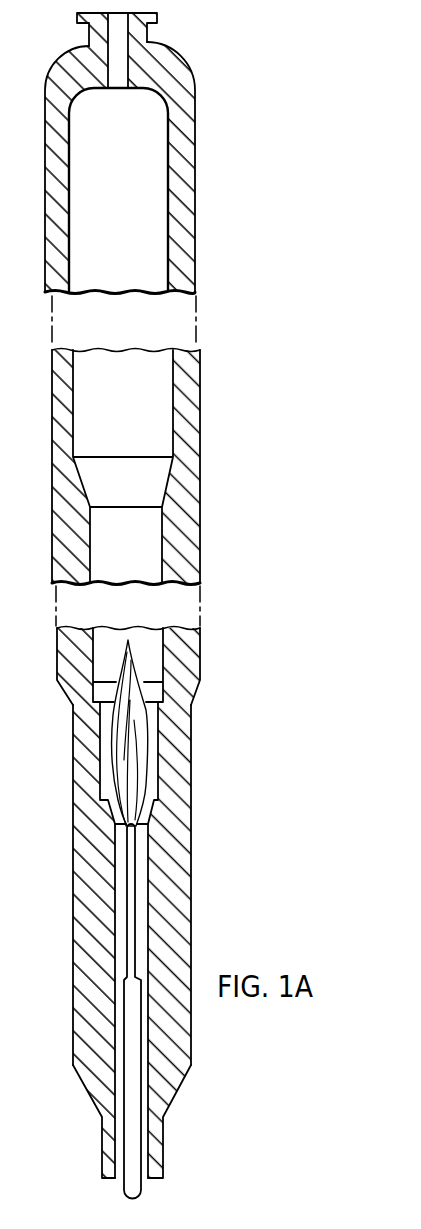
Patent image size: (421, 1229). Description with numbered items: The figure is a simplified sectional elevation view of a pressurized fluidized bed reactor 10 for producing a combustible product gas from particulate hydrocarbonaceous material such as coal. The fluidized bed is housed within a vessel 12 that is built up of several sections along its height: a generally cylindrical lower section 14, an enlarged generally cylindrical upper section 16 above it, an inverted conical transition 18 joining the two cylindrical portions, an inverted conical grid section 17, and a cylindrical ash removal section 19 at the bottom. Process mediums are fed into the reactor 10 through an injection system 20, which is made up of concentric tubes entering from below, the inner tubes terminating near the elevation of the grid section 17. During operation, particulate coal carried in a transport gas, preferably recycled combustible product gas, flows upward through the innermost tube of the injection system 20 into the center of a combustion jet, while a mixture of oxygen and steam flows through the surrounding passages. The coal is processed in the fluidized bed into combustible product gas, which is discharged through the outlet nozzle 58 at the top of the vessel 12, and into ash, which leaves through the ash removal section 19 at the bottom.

The pressurized fluidized bed reactor 10 is at (245, 578).
The vessel 12 is at (197, 253).
The lower section 14 is at (183, 932).
The upper section 16 is at (200, 405).
The grid section 17 is at (147, 807).
The transition 18 is at (202, 688).
The ash removal section 19 is at (160, 1152).
The injection system 20 is at (132, 1023).
The outlet nozzle 58 is at (145, 33).